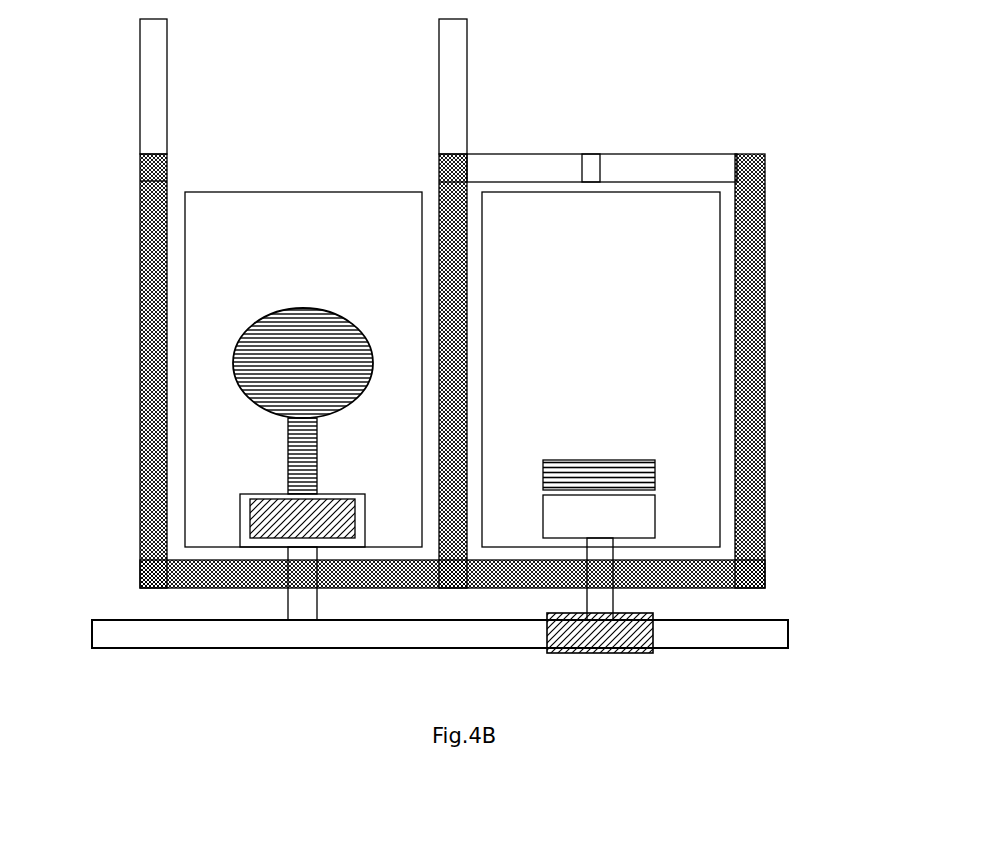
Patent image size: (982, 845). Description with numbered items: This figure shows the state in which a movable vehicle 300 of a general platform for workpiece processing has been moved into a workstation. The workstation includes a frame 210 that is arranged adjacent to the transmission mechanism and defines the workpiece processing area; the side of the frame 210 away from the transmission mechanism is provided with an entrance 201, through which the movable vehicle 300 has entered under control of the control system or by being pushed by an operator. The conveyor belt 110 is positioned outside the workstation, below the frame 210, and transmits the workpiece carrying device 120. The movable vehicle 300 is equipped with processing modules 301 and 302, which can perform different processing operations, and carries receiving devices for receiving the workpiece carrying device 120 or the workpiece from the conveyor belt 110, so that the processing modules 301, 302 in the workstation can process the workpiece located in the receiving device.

The entrance 201 is at (290, 162).
The frame 210 is at (152, 330).
The movable vehicle 300 is at (185, 255).
The processing module 301 is at (245, 420).
The workpiece carrying device 120 is at (272, 530).
The processing module 302 is at (655, 460).
The conveyor belt 110 is at (773, 628).